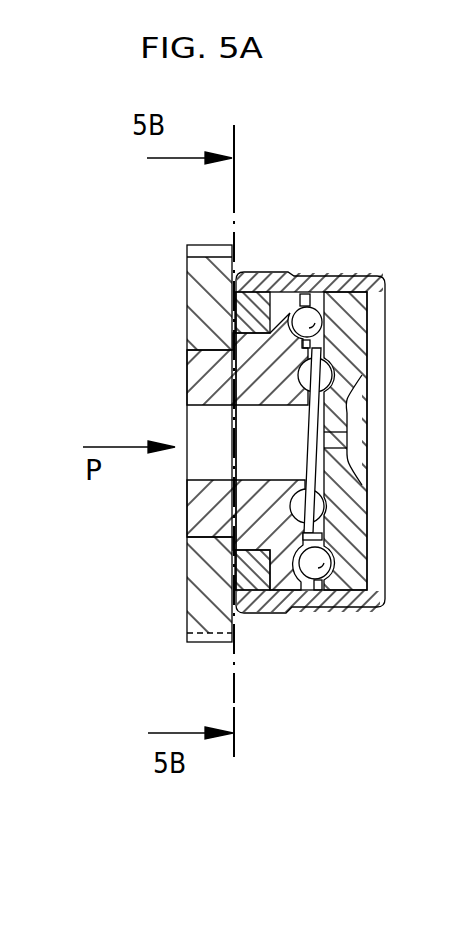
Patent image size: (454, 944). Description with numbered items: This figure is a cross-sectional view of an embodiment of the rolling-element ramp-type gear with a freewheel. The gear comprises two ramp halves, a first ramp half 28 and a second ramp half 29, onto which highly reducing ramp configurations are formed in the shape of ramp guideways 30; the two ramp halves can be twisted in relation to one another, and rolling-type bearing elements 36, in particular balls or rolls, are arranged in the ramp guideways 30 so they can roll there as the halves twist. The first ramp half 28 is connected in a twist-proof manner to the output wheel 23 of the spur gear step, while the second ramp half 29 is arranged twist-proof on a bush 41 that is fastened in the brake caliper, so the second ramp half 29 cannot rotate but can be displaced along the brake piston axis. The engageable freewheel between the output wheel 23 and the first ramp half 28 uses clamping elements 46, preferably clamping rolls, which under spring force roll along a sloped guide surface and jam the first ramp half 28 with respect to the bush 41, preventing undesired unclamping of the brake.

The output wheel 23 is at (194, 292).
The first ramp half 28 is at (194, 377).
The clamping elements 46 is at (257, 305).
The bush 41 is at (280, 600).
The rolling-type bearing elements 36 is at (318, 294).
The ramp guideways 30 is at (337, 388).
The second ramp half 29 is at (350, 572).